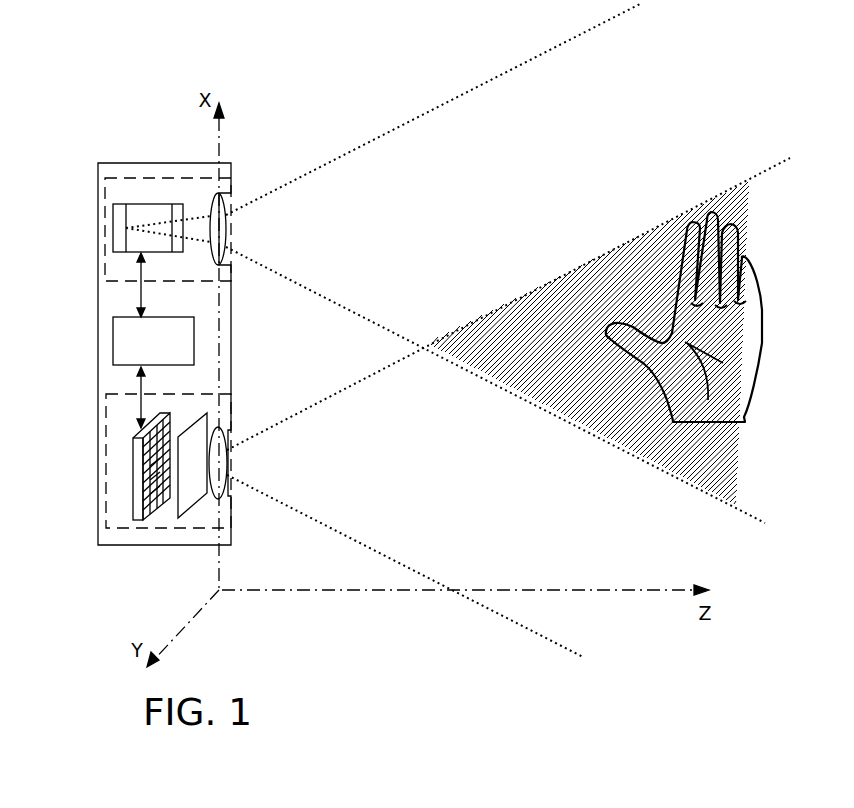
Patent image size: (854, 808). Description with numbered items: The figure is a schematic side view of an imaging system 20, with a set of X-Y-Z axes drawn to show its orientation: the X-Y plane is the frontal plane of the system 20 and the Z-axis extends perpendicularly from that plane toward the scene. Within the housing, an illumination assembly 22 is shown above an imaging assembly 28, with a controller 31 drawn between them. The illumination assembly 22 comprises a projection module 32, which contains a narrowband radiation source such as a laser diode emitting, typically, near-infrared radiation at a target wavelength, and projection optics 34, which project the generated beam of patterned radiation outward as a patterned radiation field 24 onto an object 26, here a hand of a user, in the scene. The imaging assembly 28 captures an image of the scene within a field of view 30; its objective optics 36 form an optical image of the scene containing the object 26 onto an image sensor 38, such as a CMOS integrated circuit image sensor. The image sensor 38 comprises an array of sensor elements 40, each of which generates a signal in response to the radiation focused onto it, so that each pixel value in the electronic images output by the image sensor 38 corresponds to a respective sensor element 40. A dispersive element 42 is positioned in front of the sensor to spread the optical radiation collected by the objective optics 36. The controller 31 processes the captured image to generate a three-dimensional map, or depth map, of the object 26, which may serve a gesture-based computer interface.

The imaging system 20 is at (118, 163).
The illumination assembly 22 is at (105, 228).
The patterned radiation field 24 is at (476, 90).
The object 26 is at (757, 267).
The imaging assembly 28 is at (162, 529).
The field of view 30 is at (485, 603).
The controller 31 is at (113, 355).
The projection module 32 is at (160, 204).
The projection optics 34 is at (232, 236).
The objective optics 36 is at (229, 459).
The image sensor 38 is at (131, 452).
The sensor elements 40 is at (163, 478).
The dispersive element 42 is at (198, 508).